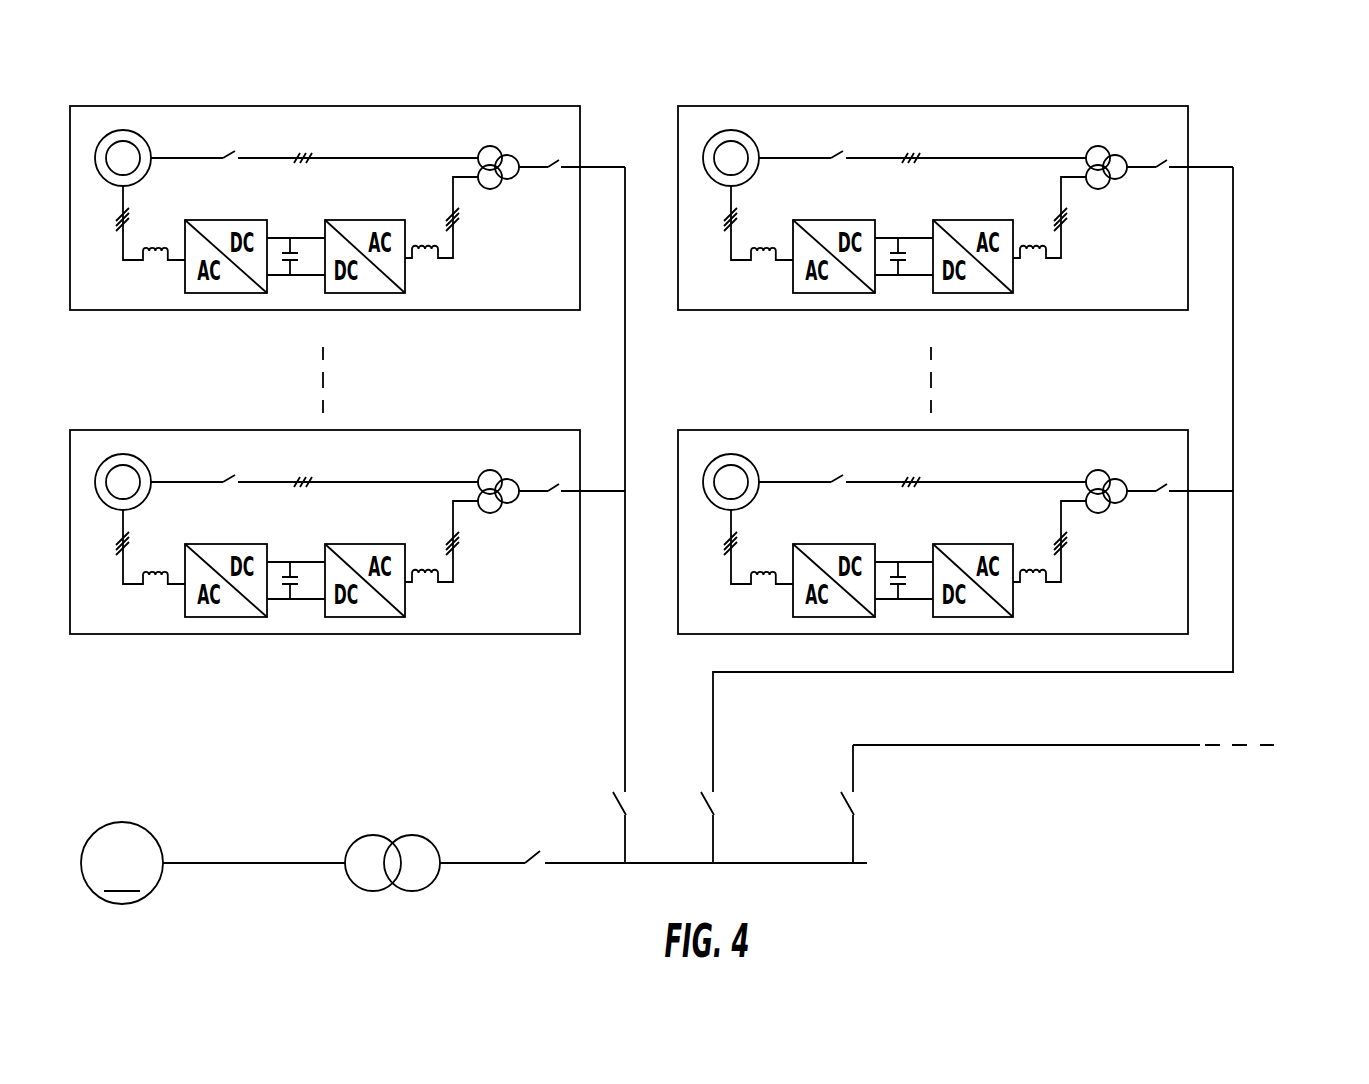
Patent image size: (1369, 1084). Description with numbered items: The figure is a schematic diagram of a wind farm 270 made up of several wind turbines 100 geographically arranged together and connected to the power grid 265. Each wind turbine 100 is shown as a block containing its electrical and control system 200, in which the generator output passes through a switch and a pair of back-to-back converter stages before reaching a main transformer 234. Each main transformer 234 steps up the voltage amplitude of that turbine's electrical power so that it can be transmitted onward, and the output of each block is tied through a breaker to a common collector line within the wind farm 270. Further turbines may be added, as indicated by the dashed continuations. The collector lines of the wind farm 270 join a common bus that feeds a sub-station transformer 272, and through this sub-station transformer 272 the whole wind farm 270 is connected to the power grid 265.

The wind turbine 100 is at (651, 328).
The electrical and control system 200 is at (629, 341).
The main transformer 234 is at (821, 285).
The power grid 265 is at (213, 863).
The wind farm 270 is at (1263, 168).
The sub-station transformer 272 is at (413, 835).